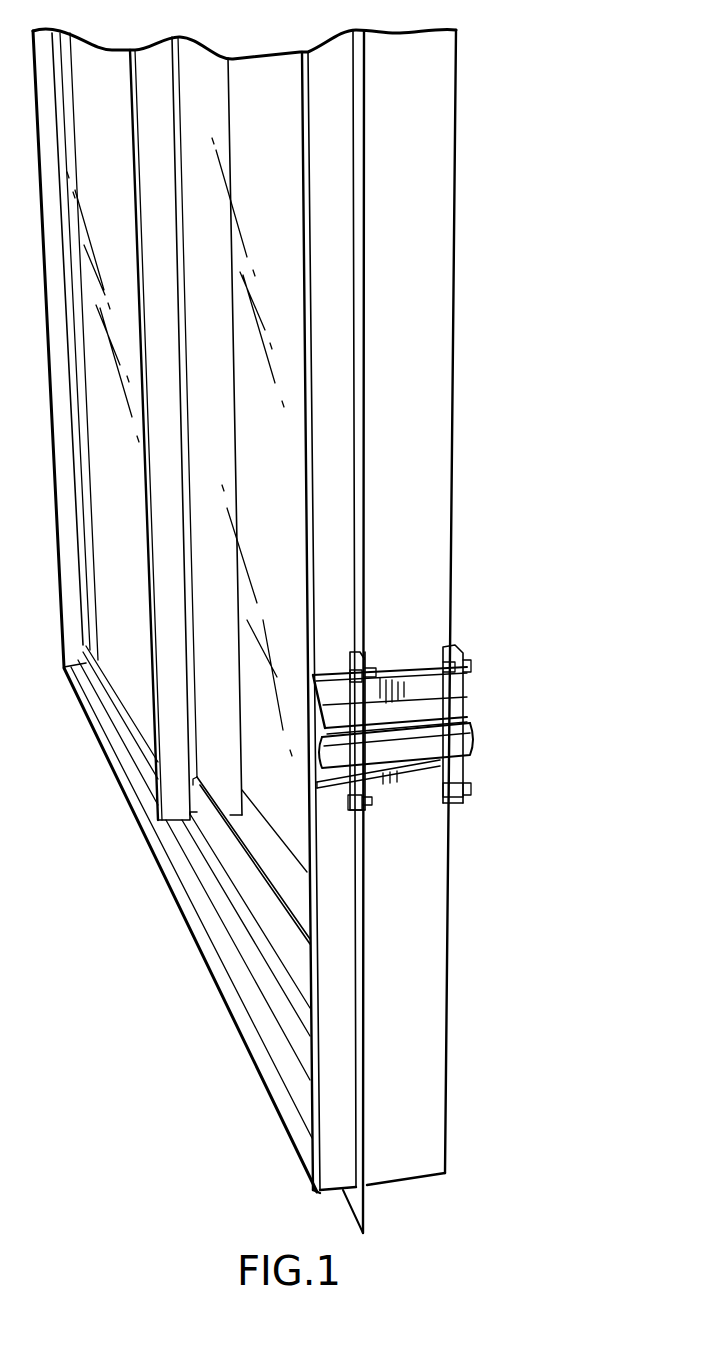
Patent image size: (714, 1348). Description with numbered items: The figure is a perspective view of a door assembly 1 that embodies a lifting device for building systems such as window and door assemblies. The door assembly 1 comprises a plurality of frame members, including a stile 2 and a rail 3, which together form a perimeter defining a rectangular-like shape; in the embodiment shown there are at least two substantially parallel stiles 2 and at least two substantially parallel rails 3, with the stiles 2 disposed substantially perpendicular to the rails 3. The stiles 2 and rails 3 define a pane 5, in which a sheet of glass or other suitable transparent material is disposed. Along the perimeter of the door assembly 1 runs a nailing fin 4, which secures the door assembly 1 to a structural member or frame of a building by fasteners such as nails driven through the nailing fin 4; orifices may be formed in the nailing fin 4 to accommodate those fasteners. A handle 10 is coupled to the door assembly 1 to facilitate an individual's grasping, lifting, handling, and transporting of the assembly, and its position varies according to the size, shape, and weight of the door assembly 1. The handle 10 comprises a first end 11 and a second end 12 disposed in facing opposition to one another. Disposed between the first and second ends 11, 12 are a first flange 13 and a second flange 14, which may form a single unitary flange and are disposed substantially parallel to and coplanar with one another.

The door assembly 1 is at (567, 603).
The stile 2 is at (413, 333).
The rail 3 is at (257, 990).
The nailing fin 4 is at (400, 587).
The pane 5 is at (260, 767).
The handle 10 is at (420, 743).
The first end 11 is at (313, 727).
The second end 12 is at (463, 695).
The first flange 13 is at (385, 775).
The second flange 14 is at (407, 680).